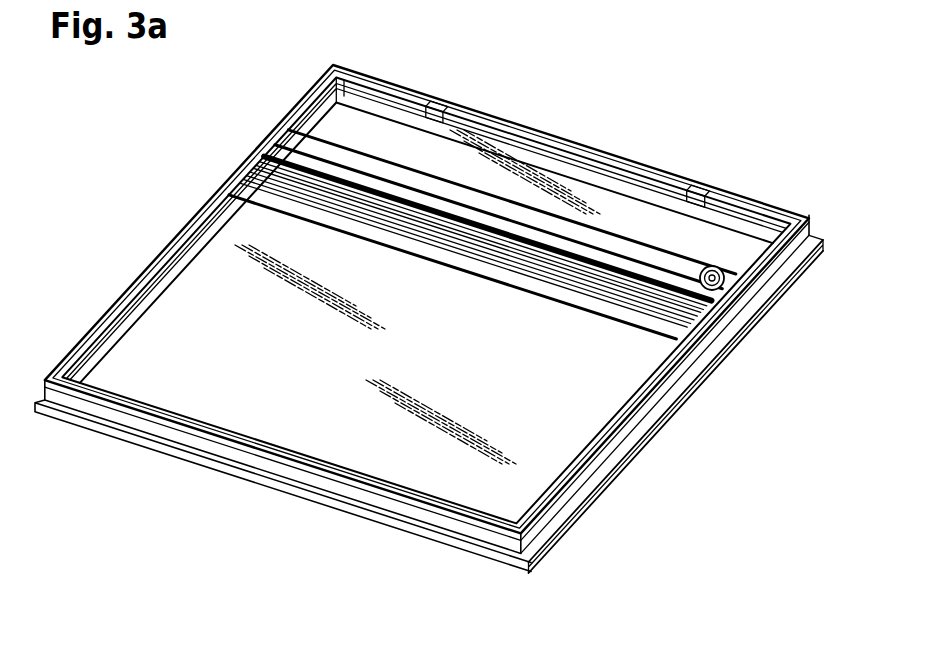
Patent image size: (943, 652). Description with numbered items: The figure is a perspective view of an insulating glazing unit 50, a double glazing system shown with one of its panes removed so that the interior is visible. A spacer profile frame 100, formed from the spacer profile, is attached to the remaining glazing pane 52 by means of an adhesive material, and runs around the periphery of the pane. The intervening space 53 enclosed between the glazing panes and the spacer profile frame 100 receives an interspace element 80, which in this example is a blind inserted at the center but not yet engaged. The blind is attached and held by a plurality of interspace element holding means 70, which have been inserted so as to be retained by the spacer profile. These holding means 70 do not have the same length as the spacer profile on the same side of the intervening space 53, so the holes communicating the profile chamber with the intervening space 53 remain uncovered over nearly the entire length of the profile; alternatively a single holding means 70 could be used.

The insulating glazing unit 50 is at (197, 475).
The glazing pane 52 is at (612, 470).
The intervening space 53 is at (287, 404).
The interspace element holding means 70 is at (430, 111).
The interspace element 80 is at (284, 181).
The spacer profile frame 100 is at (539, 124).